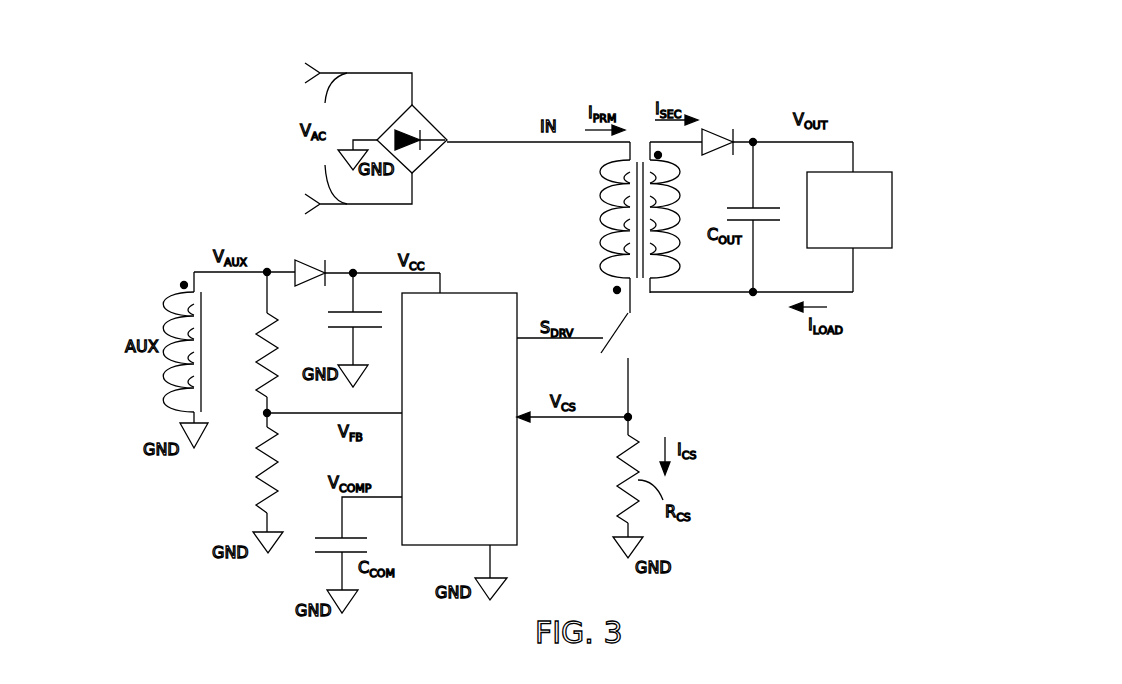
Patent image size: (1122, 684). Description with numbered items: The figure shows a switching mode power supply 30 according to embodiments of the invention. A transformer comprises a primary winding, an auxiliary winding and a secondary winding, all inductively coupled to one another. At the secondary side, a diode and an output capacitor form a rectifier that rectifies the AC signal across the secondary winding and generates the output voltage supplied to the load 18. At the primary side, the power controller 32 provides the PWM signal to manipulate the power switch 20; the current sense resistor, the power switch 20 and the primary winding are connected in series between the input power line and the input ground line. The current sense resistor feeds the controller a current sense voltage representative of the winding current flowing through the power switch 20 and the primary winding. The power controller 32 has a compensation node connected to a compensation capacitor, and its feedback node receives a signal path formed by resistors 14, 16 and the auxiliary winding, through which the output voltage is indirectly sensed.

The switching mode power supply 30 is at (660, 70).
The resistor 14 is at (277, 340).
The resistor 16 is at (260, 468).
The load 18 is at (864, 230).
The power switch 20 is at (637, 338).
The power controller 32 is at (468, 455).